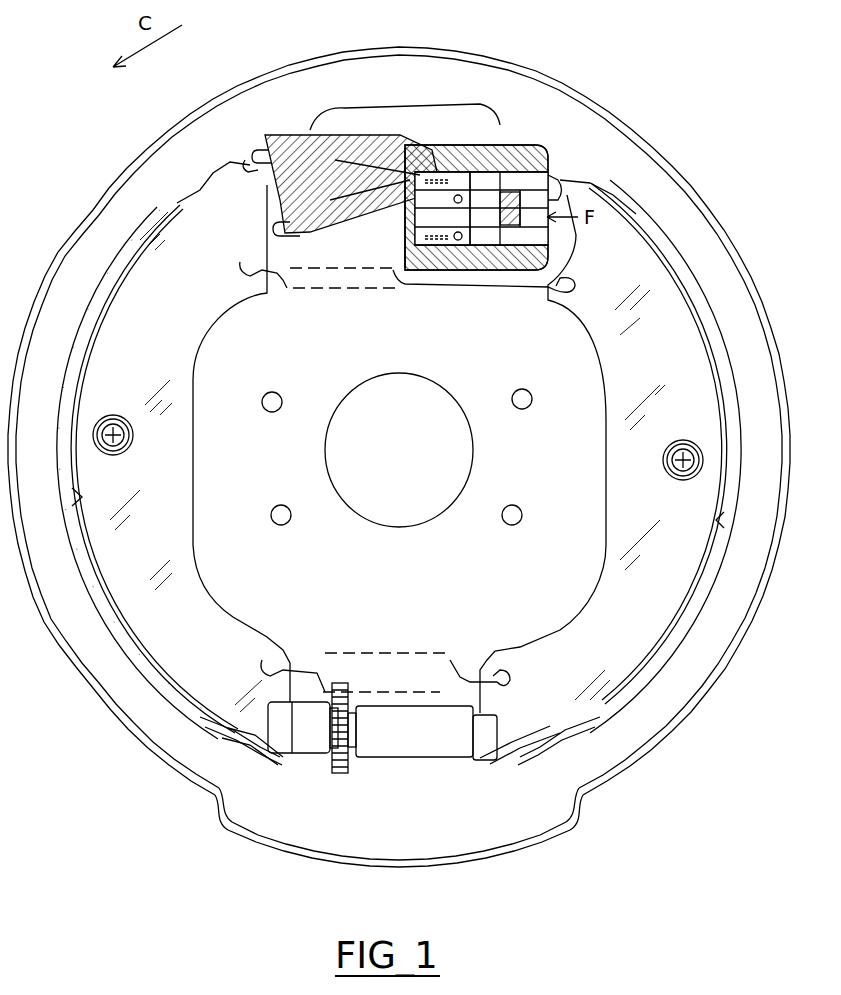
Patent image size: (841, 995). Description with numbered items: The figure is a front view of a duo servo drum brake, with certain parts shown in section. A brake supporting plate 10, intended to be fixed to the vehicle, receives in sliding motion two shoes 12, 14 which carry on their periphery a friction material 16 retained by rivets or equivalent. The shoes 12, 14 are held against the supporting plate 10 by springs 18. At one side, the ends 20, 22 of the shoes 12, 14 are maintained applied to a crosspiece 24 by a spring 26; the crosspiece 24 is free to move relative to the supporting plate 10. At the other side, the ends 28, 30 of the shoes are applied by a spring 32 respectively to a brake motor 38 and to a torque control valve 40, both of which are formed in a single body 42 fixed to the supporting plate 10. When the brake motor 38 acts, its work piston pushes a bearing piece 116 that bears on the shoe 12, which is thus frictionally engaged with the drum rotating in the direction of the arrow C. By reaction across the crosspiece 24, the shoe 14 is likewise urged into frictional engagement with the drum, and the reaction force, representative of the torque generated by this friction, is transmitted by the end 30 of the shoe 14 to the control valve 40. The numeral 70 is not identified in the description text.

The brake supporting plate 10 is at (645, 140).
The shoe 12 is at (187, 223).
The shoe 14 is at (657, 277).
The friction material 16 is at (103, 277).
The springs 18 is at (115, 413).
The end of shoe 20 is at (250, 720).
The end of shoe 22 is at (520, 730).
The crosspiece 24 is at (310, 740).
The spring 26 is at (423, 646).
The end of shoe 28 is at (233, 182).
The end of shoe 30 is at (585, 205).
The spring 32 is at (333, 288).
The brake motor 38 is at (324, 108).
The torque control valve 40 is at (497, 133).
The body 42 is at (410, 108).
The adjusting member 70 is at (567, 193).
The bearing piece 116 is at (248, 167).